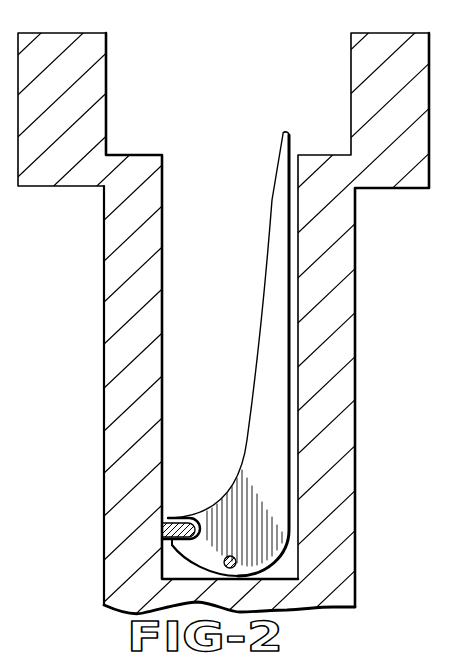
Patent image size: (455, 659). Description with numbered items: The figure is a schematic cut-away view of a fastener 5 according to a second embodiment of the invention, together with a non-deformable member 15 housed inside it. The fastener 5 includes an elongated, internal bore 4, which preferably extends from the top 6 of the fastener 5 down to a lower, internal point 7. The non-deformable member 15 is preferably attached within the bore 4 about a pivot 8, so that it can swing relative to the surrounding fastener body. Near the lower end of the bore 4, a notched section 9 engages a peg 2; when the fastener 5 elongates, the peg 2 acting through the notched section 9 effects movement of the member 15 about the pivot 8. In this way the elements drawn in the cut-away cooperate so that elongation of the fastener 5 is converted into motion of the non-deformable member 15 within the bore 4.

The top 6 is at (399, 15).
The internal bore 4 is at (120, 329).
The fastener 5 is at (332, 329).
The lower internal point 7 is at (178, 578).
The non-deformable member 15 is at (268, 328).
The notched section 9 is at (195, 515).
The peg 2 is at (168, 518).
The pivot 8 is at (227, 559).